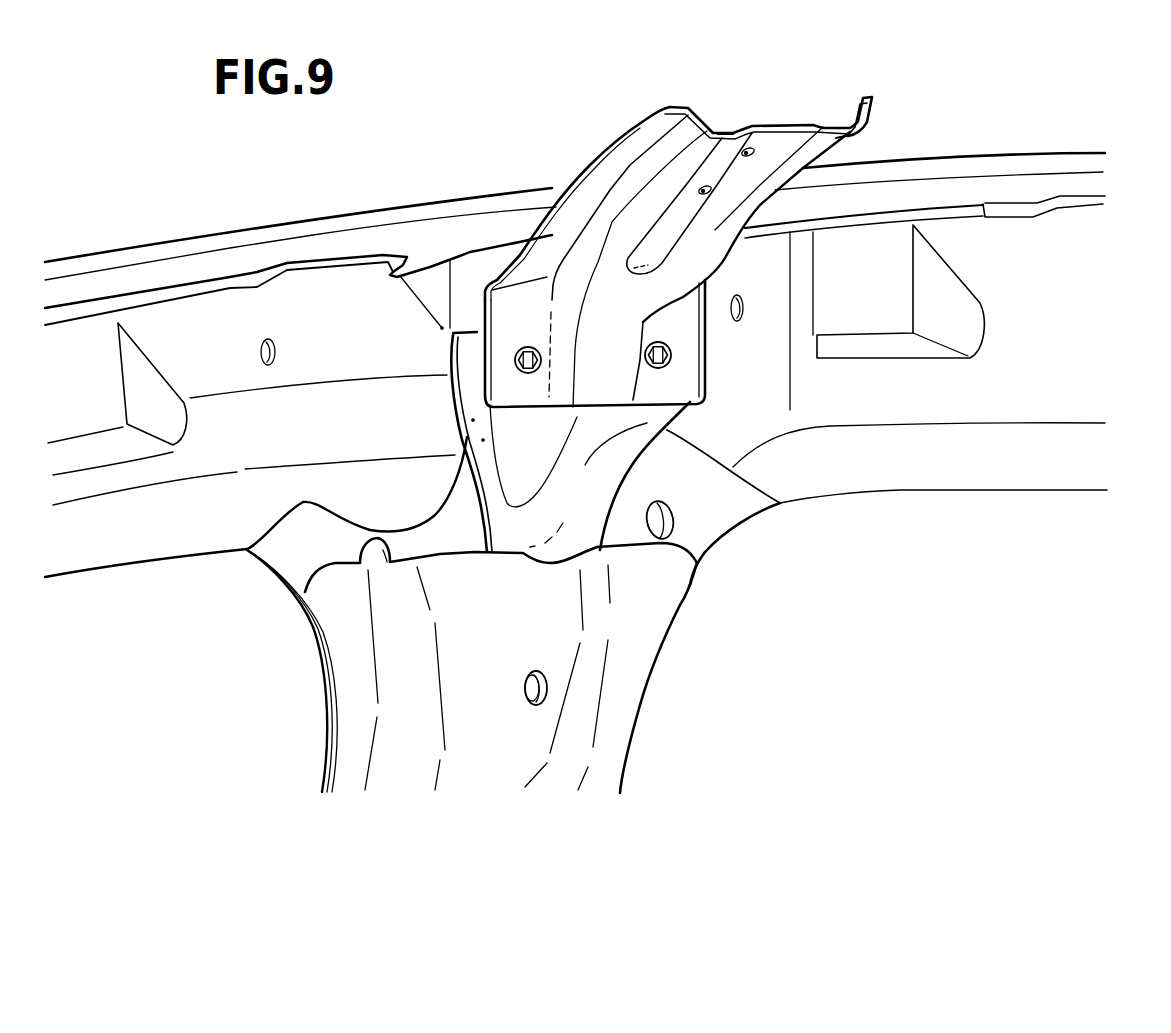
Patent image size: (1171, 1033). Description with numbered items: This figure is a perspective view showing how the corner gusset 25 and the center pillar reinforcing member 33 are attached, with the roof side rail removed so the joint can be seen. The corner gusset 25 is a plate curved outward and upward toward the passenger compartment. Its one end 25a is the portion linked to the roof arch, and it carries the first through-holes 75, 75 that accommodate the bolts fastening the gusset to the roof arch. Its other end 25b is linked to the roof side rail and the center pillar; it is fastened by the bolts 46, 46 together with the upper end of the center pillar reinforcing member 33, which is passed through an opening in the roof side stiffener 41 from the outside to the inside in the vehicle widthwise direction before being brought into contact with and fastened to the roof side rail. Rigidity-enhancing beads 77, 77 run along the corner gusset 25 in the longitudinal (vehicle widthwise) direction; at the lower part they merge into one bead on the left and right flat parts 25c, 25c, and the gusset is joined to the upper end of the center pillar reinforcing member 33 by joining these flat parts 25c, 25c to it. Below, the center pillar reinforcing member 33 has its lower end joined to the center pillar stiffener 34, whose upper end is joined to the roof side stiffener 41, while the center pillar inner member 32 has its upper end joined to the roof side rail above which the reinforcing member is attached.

The corner gusset 25 is at (613, 285).
The one end of the corner gusset 25a is at (775, 122).
The other end of the corner gusset 25b is at (522, 505).
The flat parts 25c is at (497, 310).
The bolts 46 is at (509, 363).
The first through-holes 75 is at (750, 152).
The rigidity-enhancing beads 77 is at (727, 131).
The roof side stiffener 41 is at (1070, 250).
The center pillar reinforcing member 33 is at (628, 458).
The center pillar stiffener 34 is at (713, 530).
The center pillar inner member 32 is at (633, 662).